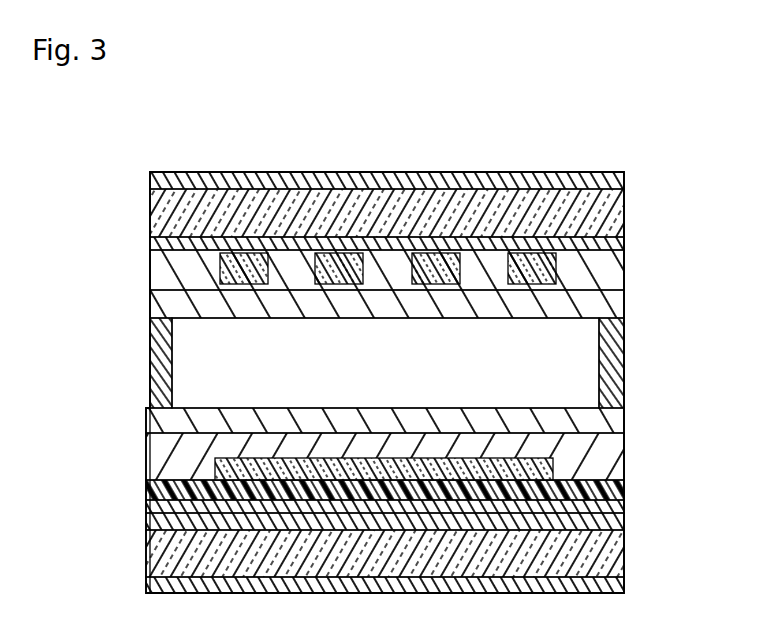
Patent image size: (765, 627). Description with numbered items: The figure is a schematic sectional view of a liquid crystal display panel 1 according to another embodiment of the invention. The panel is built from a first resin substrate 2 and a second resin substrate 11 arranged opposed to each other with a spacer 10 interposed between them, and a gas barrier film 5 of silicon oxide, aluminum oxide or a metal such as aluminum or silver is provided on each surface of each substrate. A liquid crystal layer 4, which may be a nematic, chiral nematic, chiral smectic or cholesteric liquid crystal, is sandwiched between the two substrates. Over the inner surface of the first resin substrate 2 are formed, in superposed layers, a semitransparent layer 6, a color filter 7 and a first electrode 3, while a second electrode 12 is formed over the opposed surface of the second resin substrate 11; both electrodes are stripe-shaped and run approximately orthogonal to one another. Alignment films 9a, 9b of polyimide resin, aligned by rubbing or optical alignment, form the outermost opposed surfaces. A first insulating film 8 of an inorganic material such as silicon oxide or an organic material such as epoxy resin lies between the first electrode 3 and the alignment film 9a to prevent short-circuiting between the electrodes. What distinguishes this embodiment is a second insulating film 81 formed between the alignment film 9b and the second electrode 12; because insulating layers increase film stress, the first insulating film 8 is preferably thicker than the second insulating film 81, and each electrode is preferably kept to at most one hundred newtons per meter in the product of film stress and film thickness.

The liquid crystal display panel 1 is at (672, 121).
The first resin substrate 2 is at (622, 557).
The first electrode 3 is at (553, 469).
The liquid crystal layer 4 is at (582, 362).
The gas barrier film 5 is at (625, 181).
The semitransparent layer 6 is at (622, 506).
The color filter 7 is at (618, 491).
The first insulating film 8 is at (612, 445).
The alignment film 9a is at (610, 418).
The alignment film 9b is at (625, 304).
The spacer 10 is at (158, 362).
The second resin substrate 11 is at (614, 213).
The second electrode 12 is at (558, 271).
The second insulating film 81 is at (158, 277).